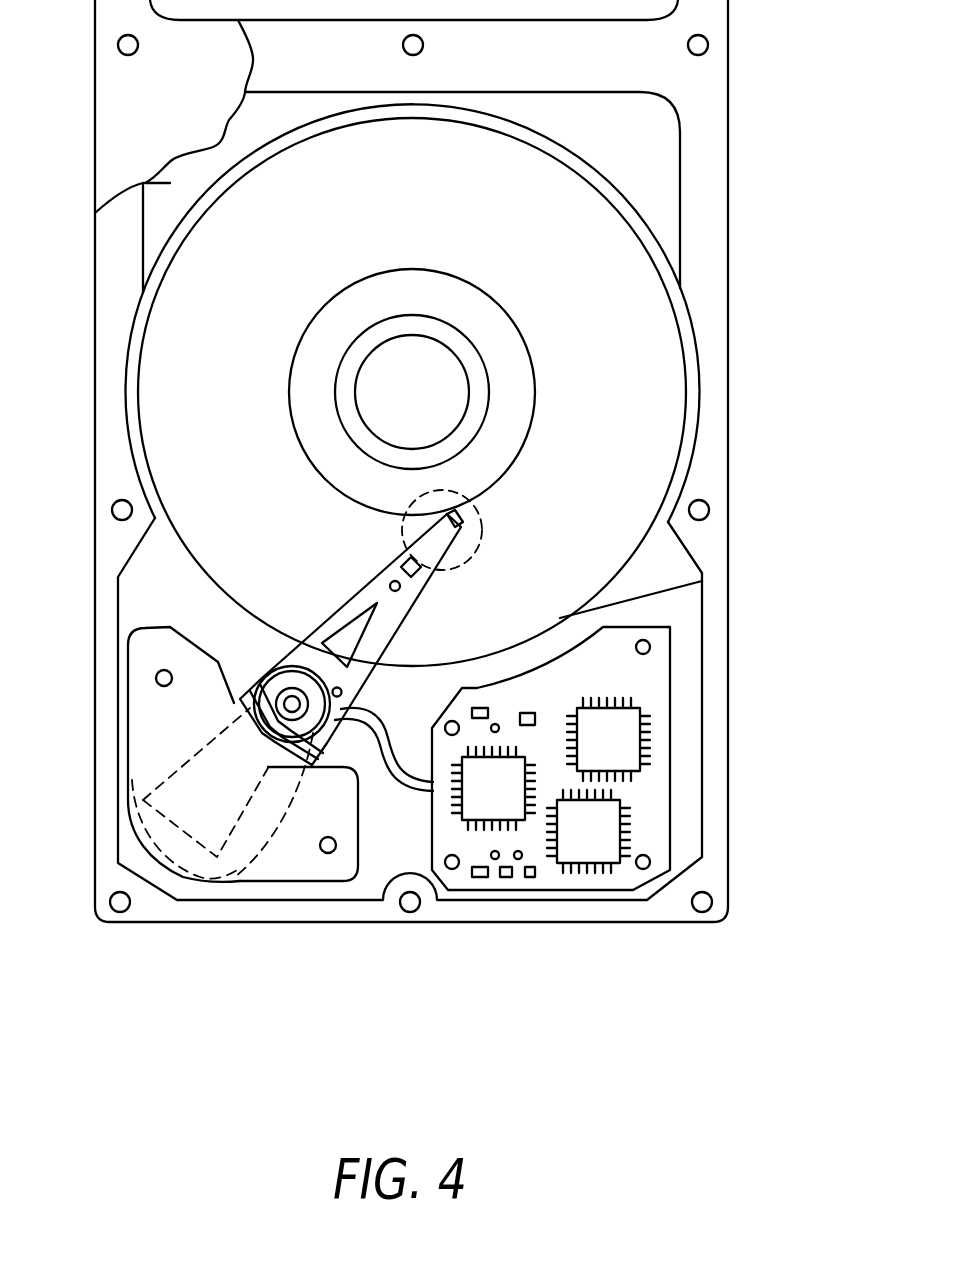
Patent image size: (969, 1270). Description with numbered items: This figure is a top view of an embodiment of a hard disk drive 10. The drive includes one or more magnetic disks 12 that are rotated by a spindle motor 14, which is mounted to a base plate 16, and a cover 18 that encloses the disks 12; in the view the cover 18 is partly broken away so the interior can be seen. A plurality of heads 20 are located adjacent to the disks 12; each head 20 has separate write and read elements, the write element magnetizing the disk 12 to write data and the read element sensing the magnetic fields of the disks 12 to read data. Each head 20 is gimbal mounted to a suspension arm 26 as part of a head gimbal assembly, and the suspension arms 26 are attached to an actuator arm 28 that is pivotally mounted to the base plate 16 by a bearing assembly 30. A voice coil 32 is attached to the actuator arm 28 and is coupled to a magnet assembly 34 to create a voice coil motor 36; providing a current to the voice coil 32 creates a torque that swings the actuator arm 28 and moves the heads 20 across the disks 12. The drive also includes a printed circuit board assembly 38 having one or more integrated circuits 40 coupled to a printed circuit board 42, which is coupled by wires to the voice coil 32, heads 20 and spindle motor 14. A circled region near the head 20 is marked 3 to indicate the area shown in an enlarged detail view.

The hard disk drive 10 is at (724, 372).
The magnetic disk 12 is at (412, 392).
The spindle motor 14 is at (415, 390).
The base plate 16 is at (662, 190).
The cover 18 is at (112, 104).
The head 20 is at (455, 522).
The suspension arm 26 is at (423, 550).
The actuator arm 28 is at (297, 653).
The bearing assembly 30 is at (275, 719).
The voice coil 32 is at (215, 866).
The magnet assembly 34 is at (300, 866).
The voice coil motor 36 is at (84, 795).
The printed circuit board assembly 38 is at (660, 790).
The integrated circuit 40 is at (578, 833).
The printed circuit board 42 is at (652, 680).
The detail view FIG. 3 indicator 3 is at (485, 525).